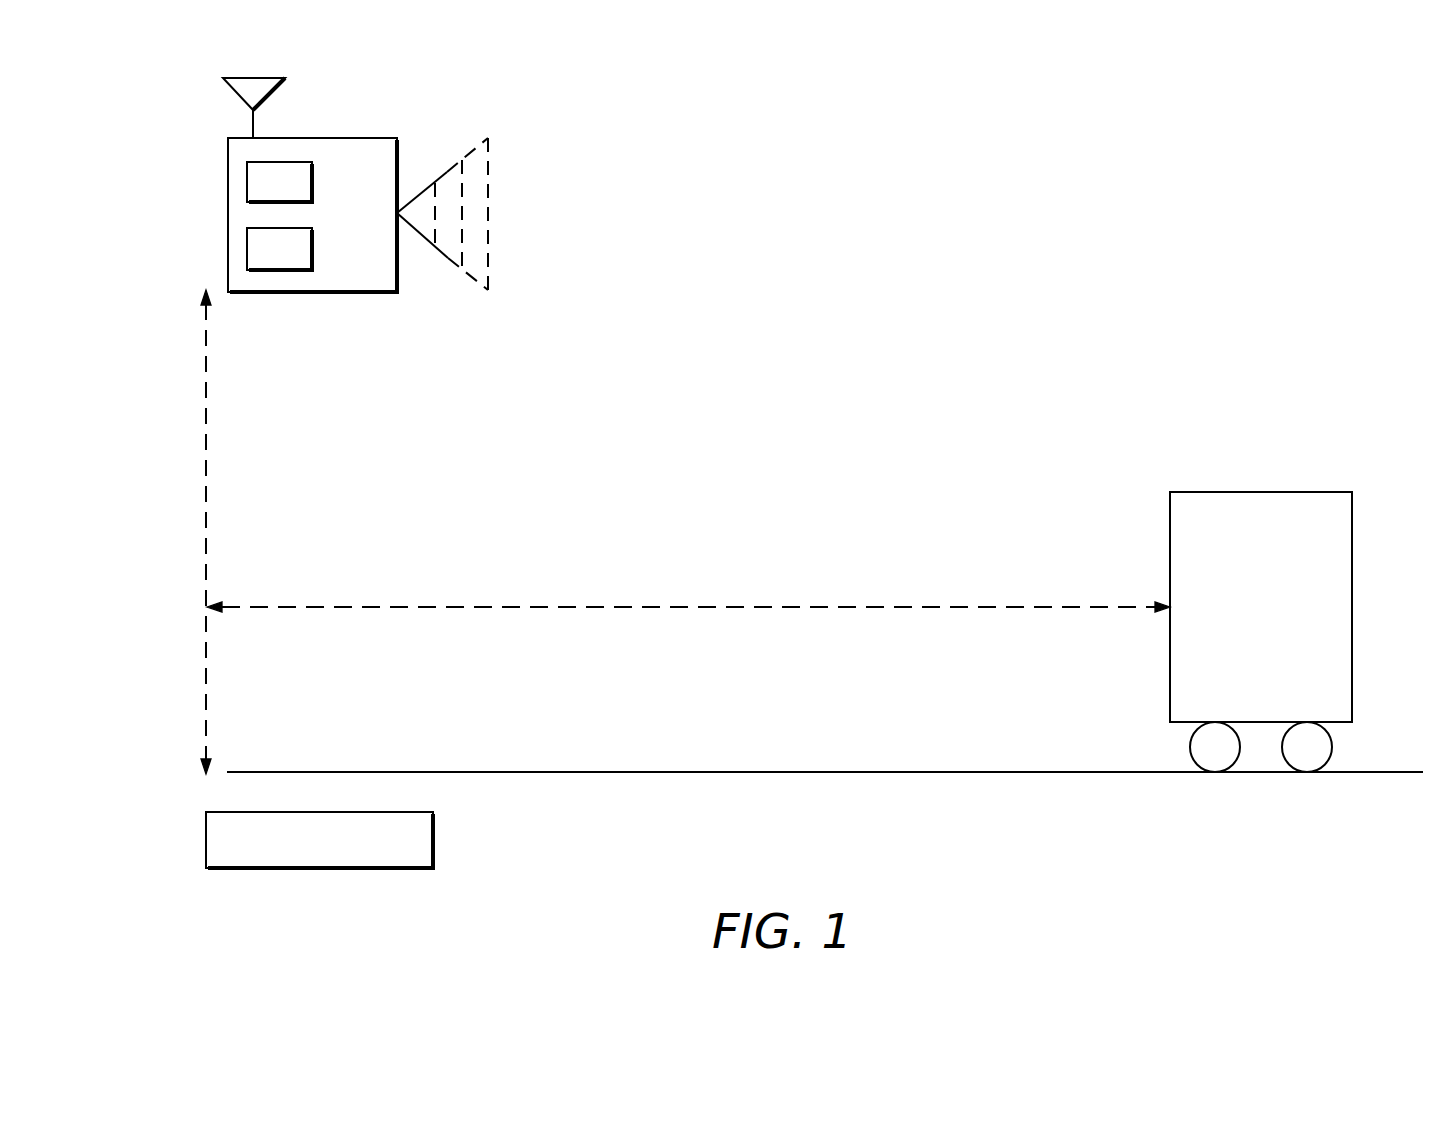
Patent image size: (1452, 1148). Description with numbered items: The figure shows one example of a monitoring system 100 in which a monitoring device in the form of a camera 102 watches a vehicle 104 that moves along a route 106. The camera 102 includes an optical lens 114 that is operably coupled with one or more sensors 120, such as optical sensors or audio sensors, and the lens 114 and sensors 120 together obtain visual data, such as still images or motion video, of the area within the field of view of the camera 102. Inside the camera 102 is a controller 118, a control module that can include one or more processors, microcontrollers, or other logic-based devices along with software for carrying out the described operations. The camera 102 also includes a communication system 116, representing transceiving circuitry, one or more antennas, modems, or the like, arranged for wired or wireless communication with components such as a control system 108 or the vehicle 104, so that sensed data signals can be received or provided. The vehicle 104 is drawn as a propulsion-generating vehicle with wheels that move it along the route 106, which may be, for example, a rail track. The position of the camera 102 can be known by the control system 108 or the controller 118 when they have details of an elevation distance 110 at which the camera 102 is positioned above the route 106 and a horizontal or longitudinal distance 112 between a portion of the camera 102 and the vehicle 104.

The monitoring system 100 is at (1076, 173).
The camera 102 is at (373, 138).
The vehicle 104 is at (1260, 492).
The route 106 is at (1264, 784).
The control system 108 is at (407, 812).
The elevation distance 110 is at (205, 532).
The horizontal or longitudinal distance 112 is at (687, 607).
The optical lens 114 is at (441, 278).
The communication system 116 is at (252, 78).
The controller 118 is at (314, 185).
The sensors 120 is at (314, 250).